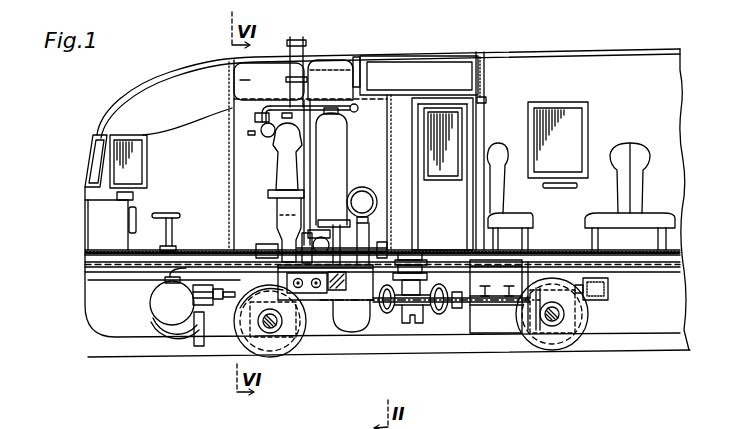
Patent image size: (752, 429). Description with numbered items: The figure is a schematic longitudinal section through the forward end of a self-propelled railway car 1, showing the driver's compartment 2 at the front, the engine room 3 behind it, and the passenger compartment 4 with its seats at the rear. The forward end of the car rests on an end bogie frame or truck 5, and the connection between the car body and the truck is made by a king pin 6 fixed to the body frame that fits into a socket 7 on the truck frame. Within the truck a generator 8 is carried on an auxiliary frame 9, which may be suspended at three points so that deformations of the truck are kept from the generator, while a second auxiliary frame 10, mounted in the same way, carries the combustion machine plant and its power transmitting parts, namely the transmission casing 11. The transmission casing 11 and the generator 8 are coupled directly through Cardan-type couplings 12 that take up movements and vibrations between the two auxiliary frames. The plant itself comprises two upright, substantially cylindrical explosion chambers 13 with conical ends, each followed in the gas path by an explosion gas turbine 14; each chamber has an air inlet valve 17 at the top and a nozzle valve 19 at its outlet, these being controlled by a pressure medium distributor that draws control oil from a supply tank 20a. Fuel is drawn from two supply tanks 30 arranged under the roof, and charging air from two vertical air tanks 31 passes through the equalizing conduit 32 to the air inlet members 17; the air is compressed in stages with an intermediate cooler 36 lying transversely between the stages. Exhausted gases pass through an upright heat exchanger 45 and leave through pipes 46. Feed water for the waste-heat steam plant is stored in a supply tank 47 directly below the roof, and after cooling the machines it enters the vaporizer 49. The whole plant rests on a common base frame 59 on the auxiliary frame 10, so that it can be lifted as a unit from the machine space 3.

The self-propelled railway car 1 is at (159, 80).
The driver's compartment 2 is at (158, 179).
The engine room 3 is at (350, 60).
The passenger compartment 4 is at (543, 151).
The end bogie frame 5 is at (214, 315).
The king pin 6 is at (411, 280).
The socket 7 is at (420, 308).
The generator 8 is at (496, 296).
The auxiliary frame 9 is at (591, 306).
The second auxiliary frame 10 is at (343, 321).
The transmission casing 11 is at (353, 322).
The couplings 12 is at (386, 314).
The explosion chambers 13 is at (278, 212).
The explosion gas turbine 14 is at (316, 232).
The air inlet valve 17 is at (265, 137).
The nozzle valve 19 is at (266, 247).
The supply tank 20a is at (162, 304).
The supply tanks 30 is at (234, 84).
The air tanks 31 is at (338, 153).
The equalizing conduit 32 is at (349, 112).
The intermediate cooler 36 is at (363, 199).
The heat exchanger 45 is at (297, 91).
The exhaust pipes 46 is at (297, 50).
The feed water supply tank 47 is at (432, 68).
The vaporizer 49 is at (331, 80).
The base frame 59 is at (308, 291).